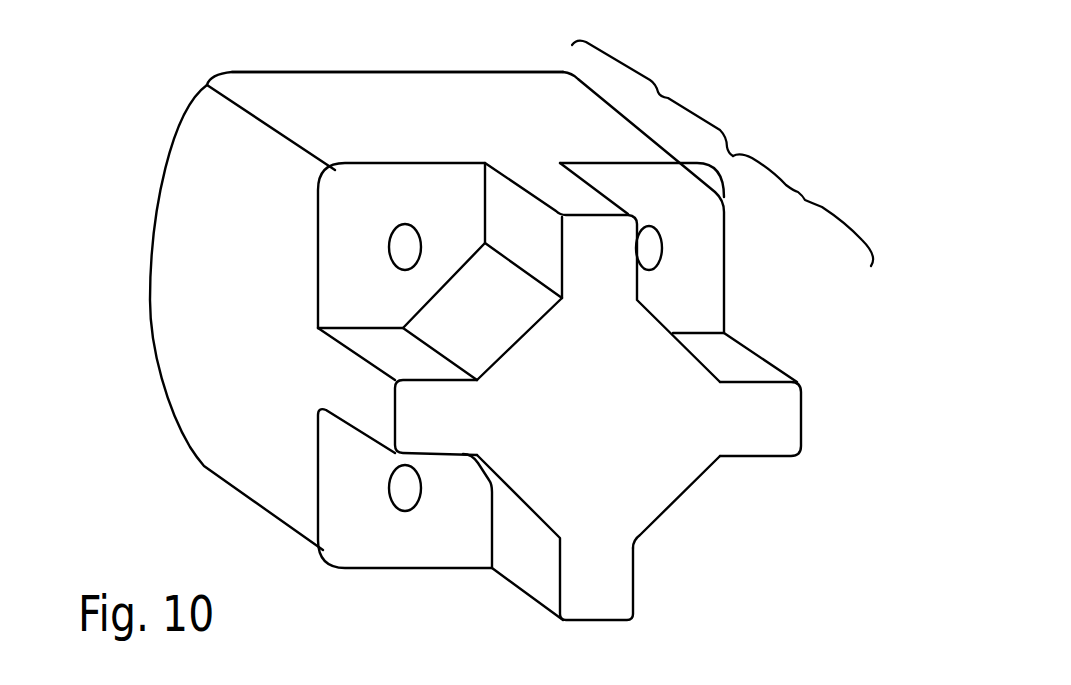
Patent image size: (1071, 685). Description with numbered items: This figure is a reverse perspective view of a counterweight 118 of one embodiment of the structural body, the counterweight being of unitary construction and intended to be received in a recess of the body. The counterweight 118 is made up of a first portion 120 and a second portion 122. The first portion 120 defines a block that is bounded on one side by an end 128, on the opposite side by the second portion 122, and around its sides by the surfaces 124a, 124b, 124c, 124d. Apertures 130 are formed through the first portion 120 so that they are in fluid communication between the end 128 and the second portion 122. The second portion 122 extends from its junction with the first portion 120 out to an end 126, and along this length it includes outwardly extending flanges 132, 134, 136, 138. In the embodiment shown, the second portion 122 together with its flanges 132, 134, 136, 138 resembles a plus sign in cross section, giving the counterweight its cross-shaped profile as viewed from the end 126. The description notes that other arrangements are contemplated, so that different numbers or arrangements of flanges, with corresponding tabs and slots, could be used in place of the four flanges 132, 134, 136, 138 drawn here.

The counterweight 118 is at (253, 73).
The first portion 120 is at (660, 96).
The second portion 122 is at (800, 194).
The surface 124a is at (728, 304).
The surface 124b is at (545, 82).
The surface 124c is at (208, 238).
The surface 124d is at (434, 569).
The end 126 is at (638, 498).
The end 128 is at (391, 73).
The apertures 130 is at (398, 245).
The flange 132 is at (787, 421).
The flange 134 is at (587, 257).
The flange 136 is at (418, 407).
The flange 138 is at (612, 594).